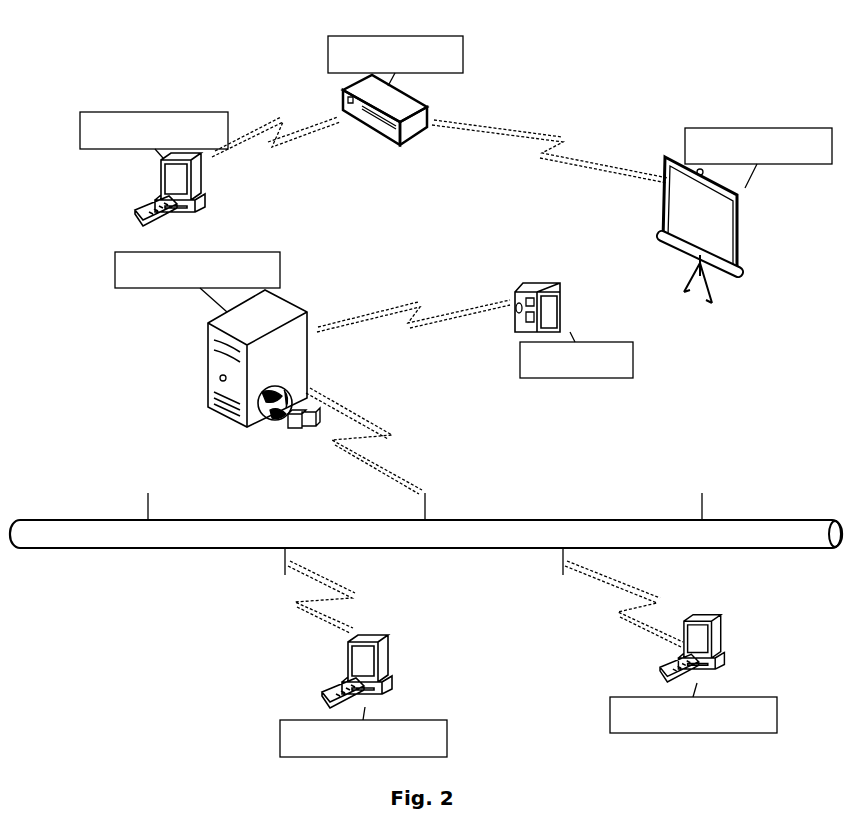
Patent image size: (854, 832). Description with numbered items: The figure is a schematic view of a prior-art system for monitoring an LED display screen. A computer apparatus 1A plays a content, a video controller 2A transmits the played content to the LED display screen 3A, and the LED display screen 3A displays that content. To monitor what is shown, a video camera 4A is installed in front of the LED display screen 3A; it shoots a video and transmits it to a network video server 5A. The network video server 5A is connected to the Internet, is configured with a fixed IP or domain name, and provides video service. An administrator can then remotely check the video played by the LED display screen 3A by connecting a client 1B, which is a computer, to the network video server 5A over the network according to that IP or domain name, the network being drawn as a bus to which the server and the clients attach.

The computer apparatus 1A is at (138, 117).
The video controller 2A is at (395, 42).
The LED display screen 3A is at (737, 137).
The video camera 4A is at (593, 375).
The network video server 5A is at (132, 262).
The client 1B is at (308, 728).